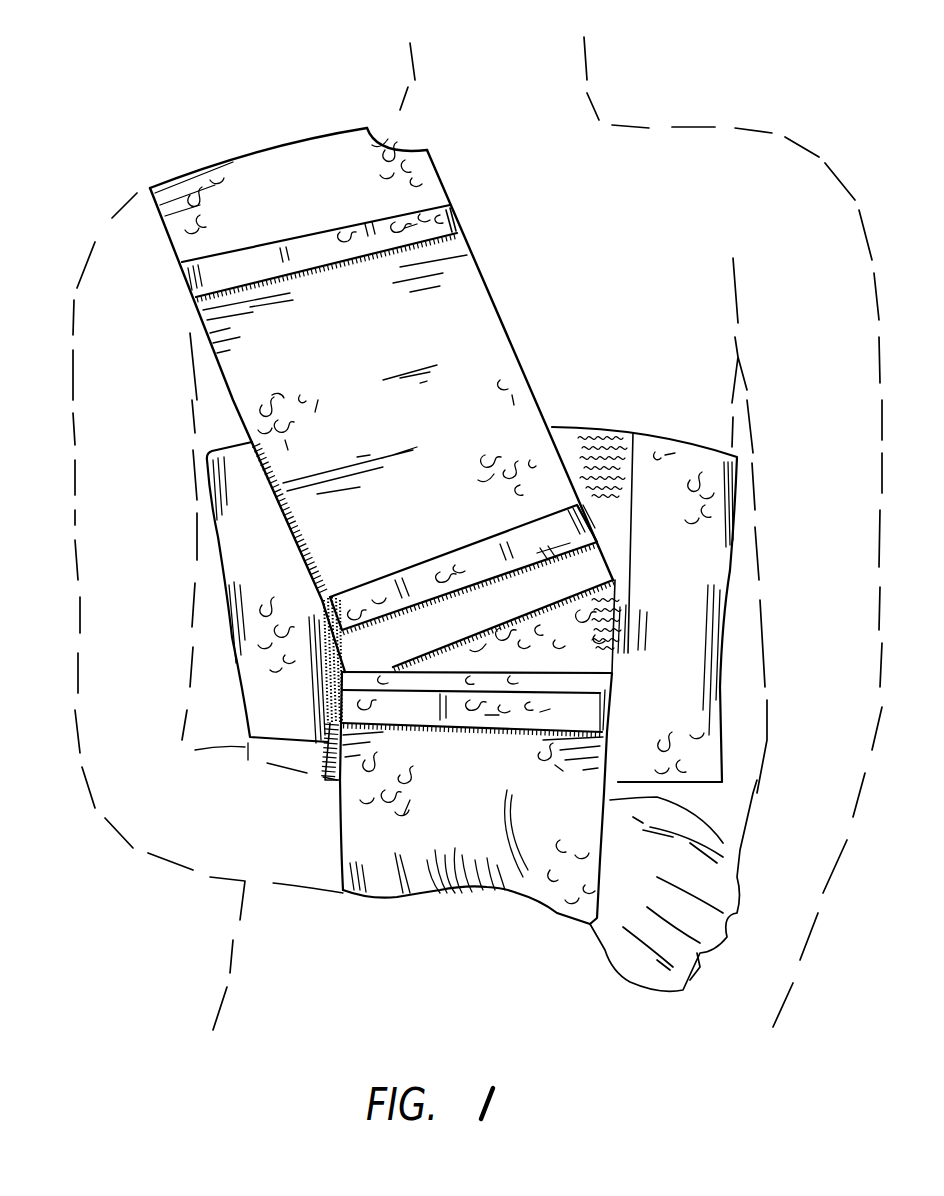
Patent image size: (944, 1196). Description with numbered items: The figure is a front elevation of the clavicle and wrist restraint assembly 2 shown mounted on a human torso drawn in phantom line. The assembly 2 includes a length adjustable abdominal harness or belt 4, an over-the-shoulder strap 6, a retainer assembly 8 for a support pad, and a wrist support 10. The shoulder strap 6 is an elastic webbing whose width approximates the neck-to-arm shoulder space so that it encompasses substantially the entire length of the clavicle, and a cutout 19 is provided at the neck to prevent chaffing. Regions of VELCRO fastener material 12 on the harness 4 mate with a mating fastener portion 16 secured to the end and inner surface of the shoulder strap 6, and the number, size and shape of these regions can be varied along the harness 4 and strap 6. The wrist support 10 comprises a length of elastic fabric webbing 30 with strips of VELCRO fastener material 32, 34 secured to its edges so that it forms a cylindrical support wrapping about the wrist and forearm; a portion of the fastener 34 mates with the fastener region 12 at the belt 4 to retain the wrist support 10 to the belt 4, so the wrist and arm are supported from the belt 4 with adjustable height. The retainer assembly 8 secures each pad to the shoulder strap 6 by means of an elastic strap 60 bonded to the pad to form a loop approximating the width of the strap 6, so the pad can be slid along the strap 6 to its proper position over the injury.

The shoulder or clavicle support assembly 2 is at (180, 46).
The abdominal harness or belt 4 is at (212, 575).
The over-the-shoulder strap 6 is at (160, 236).
The retainer assembly 8 is at (176, 293).
The wrist support 10 is at (372, 913).
The VELCRO fastener material region 12 is at (592, 427).
The mating fastener portion 16 is at (603, 556).
The cutout 19 is at (392, 143).
The elastic fabric webbing 30 is at (555, 917).
The VELCRO fastener strip 32 is at (335, 708).
The VELCRO fastener strip 34 is at (615, 678).
The elastic strap 60 is at (457, 225).